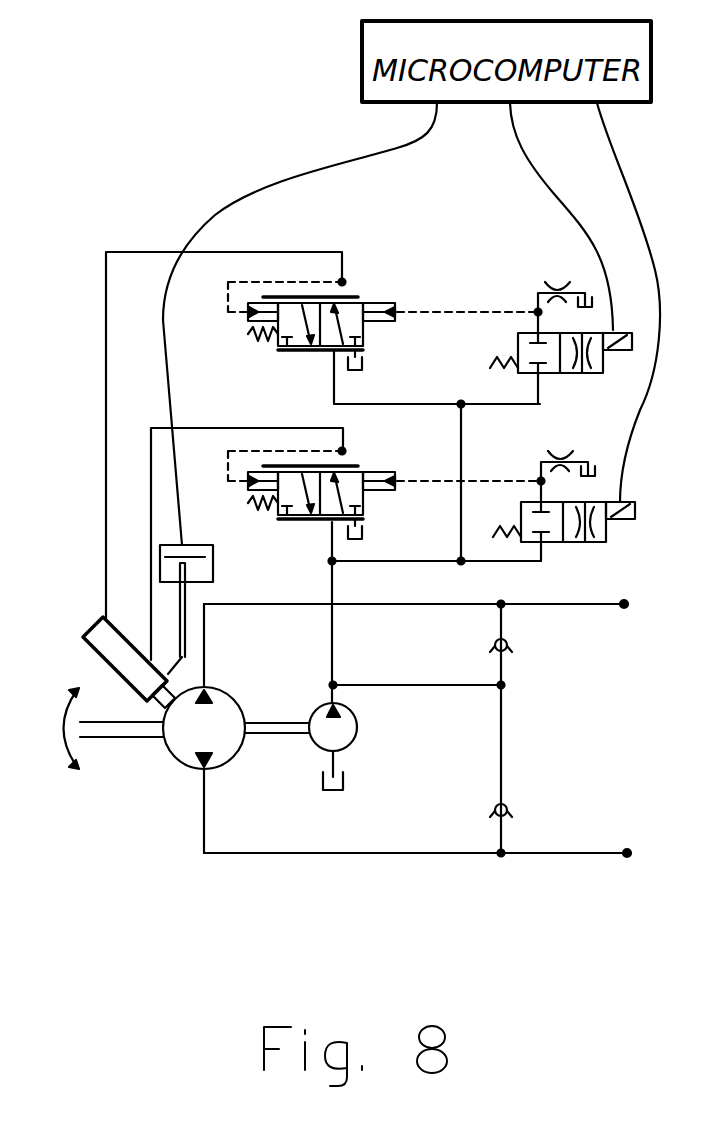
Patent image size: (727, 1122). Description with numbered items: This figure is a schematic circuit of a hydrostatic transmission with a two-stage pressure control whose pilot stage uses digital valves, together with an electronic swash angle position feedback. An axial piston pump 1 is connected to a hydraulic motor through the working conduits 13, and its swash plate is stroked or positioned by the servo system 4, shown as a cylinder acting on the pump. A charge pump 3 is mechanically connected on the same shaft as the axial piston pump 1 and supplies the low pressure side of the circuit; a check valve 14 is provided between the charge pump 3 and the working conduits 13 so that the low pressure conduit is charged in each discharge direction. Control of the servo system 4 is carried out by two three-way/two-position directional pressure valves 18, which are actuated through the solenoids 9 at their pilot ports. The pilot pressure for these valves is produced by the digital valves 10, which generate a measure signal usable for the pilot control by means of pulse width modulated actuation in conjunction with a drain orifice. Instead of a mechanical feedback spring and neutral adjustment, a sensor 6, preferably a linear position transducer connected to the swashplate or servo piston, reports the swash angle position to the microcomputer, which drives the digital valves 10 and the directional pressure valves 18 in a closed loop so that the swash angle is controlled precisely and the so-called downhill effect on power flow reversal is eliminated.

The axial piston pump 1 is at (236, 756).
The charge pump 3 is at (355, 747).
The servo system 4 is at (102, 618).
The sensor 6 is at (160, 563).
The solenoids 9 is at (243, 326).
The digital valves 10 is at (566, 486).
The working conduits 13 is at (568, 604).
The check valve 14 is at (508, 649).
The three-way/two-position directional pressure valves 18 is at (276, 460).